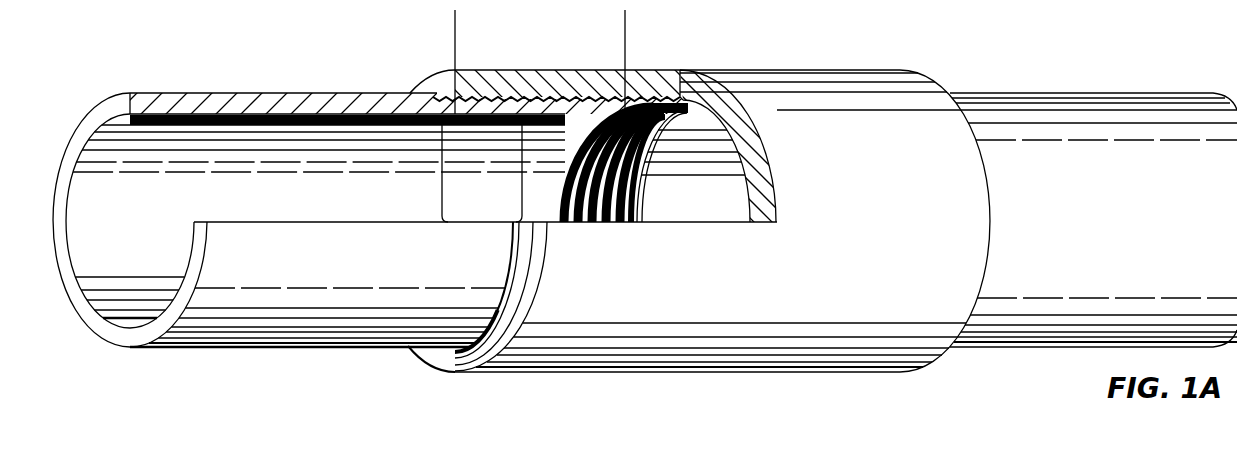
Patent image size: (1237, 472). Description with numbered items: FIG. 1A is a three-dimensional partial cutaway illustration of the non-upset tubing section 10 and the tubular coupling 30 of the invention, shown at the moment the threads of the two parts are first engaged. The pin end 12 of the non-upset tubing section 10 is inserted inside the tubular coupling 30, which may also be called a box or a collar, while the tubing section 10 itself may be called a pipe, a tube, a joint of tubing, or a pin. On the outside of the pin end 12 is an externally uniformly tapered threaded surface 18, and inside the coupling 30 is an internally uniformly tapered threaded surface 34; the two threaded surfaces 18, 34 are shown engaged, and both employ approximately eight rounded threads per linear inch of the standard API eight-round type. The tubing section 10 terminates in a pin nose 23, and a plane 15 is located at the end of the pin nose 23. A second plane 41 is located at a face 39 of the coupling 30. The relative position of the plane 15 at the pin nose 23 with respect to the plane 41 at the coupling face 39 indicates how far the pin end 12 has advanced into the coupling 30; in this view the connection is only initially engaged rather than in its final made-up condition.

The non-upset tubing section 10 is at (292, 93).
The pin end 12 is at (442, 166).
The plane 15 is at (625, 33).
The externally uniformly tapered threaded surface 18 is at (522, 156).
The pin nose 23 is at (650, 163).
The tubular coupling 30 is at (808, 68).
The internally uniformly tapered threaded surface 34 is at (580, 124).
The face 39 is at (442, 82).
The plane 41 is at (455, 32).